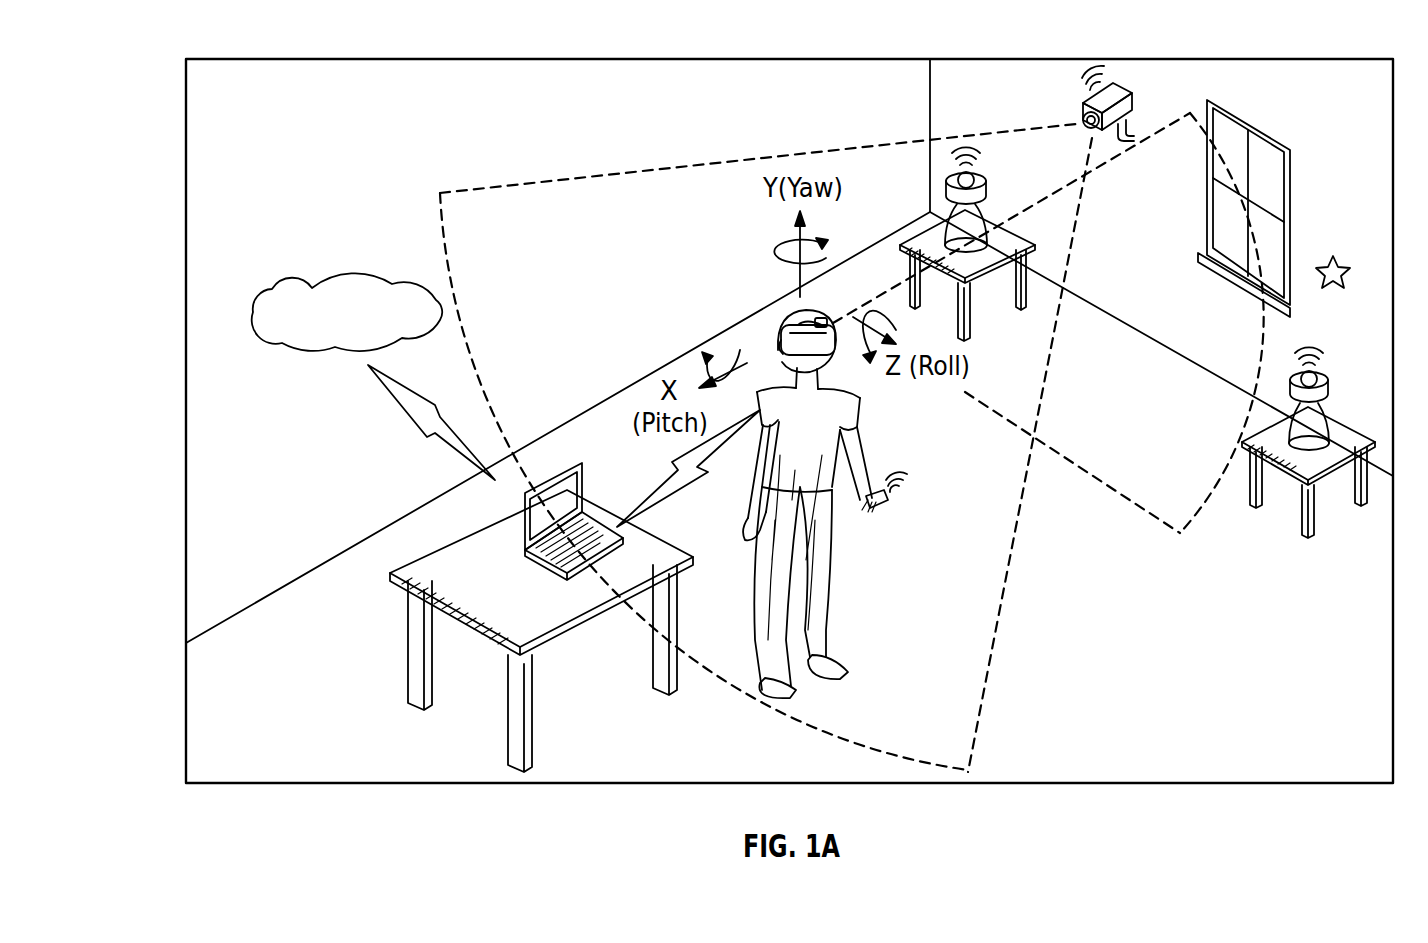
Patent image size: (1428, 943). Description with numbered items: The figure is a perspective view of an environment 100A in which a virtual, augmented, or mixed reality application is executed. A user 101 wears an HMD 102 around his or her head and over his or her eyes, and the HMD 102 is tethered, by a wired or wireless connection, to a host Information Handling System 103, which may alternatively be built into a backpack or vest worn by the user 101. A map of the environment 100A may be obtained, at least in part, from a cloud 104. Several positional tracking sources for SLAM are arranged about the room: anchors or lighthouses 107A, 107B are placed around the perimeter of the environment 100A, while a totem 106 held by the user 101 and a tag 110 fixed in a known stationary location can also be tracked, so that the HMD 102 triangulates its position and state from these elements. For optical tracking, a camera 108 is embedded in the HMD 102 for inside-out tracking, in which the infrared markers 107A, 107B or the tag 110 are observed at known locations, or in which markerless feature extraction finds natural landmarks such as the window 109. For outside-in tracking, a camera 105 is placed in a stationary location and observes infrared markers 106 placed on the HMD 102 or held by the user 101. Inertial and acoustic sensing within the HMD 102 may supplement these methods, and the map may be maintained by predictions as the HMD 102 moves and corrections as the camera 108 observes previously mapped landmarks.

The environment 100A is at (268, 58).
The user 101 is at (830, 567).
The HMD 102 is at (828, 345).
The host Information Handling System (IHS) 103 is at (523, 515).
The cloud 104 is at (276, 290).
The camera 105 is at (1134, 100).
The totem 106 is at (875, 506).
The anchor or lighthouse 107A is at (987, 188).
The anchor or lighthouse 107B is at (1328, 388).
The camera 108 is at (823, 317).
The window 109 is at (1292, 174).
The tag 110 is at (1338, 260).